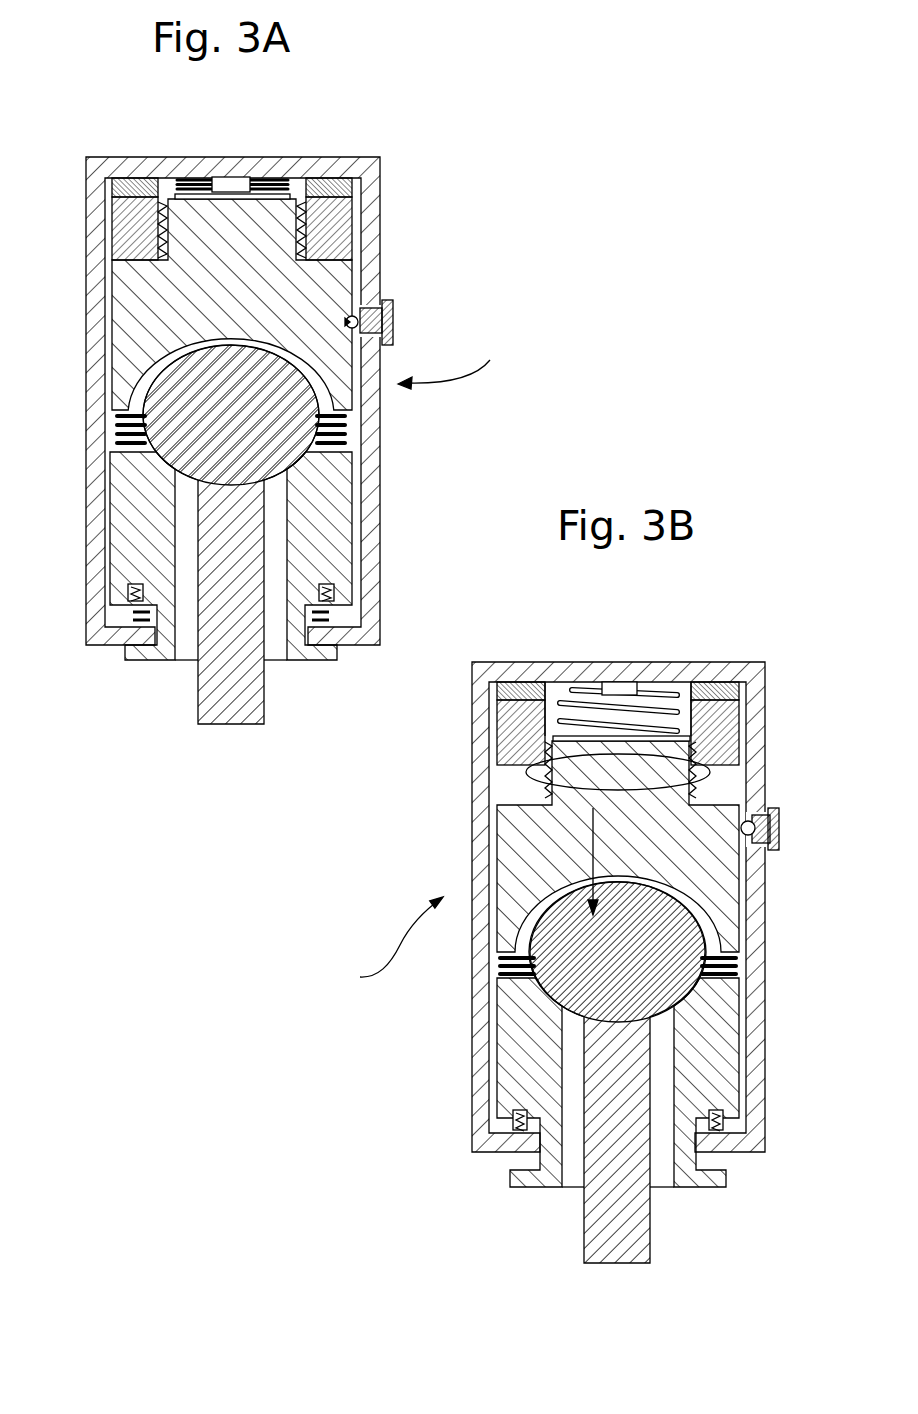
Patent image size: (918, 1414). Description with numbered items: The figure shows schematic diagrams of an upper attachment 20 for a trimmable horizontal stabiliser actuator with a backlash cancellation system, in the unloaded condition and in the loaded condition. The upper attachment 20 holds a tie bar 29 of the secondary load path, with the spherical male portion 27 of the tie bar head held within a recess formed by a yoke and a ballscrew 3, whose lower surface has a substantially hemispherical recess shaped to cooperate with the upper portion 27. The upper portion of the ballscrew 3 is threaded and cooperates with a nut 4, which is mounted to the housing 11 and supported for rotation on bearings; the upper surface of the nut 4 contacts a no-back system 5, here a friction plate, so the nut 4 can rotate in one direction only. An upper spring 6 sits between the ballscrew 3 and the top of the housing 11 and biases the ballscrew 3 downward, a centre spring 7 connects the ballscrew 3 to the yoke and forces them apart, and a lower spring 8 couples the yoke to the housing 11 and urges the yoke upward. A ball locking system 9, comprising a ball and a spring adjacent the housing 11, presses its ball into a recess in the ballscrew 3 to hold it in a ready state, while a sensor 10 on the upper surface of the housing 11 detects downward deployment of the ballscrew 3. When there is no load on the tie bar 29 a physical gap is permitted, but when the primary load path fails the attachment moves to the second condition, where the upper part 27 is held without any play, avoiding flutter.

In FIG. 3A, the ballscrew 3 is at (172, 300).
In FIG. 3B, the ballscrew 3 is at (618, 846).
In FIG. 3A, the nut 4 is at (135, 222).
In FIG. 3B, the nut 4 is at (618, 732).
In FIG. 3A, the no-back system 5 is at (135, 188).
In FIG. 3B, the no-back system 5 is at (522, 693).
In FIG. 3A, the upper spring 6 is at (282, 190).
In FIG. 3B, the upper spring 6 is at (574, 700).
In FIG. 3A, the centre spring 7 is at (133, 430).
In FIG. 3B, the centre spring 7 is at (732, 968).
In FIG. 3A, the lower spring 8 is at (135, 614).
In FIG. 3B, the lower spring 8 is at (513, 1121).
In FIG. 3B, the ball locking system 9 is at (768, 828).
In FIG. 3A, the sensor 10 is at (232, 183).
In FIG. 3B, the sensor 10 is at (620, 690).
In FIG. 3A, the housing 11 is at (370, 262).
In FIG. 3B, the housing 11 is at (757, 690).
In FIG. 3A, the upper attachment 20 is at (455, 361).
In FIG. 3B, the upper attachment 20 is at (385, 944).
In FIG. 3A, the male portion of the tie bar head 27 is at (232, 424).
In FIG. 3B, the male portion of the tie bar head 27 is at (617, 948).
In FIG. 3A, the tie bar 29 is at (233, 700).
In FIG. 3B, the tie bar 29 is at (625, 1228).